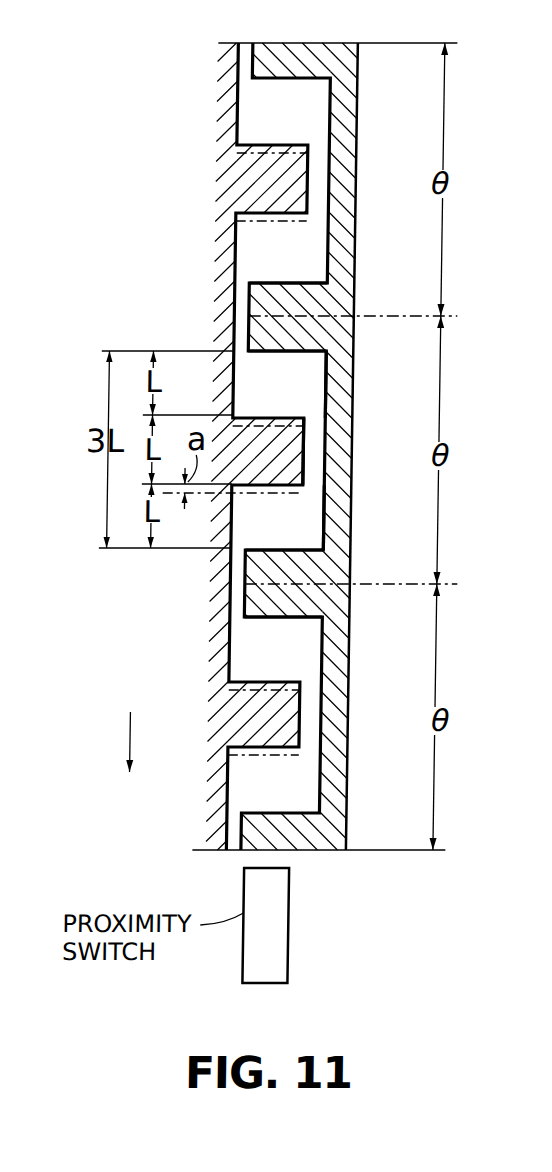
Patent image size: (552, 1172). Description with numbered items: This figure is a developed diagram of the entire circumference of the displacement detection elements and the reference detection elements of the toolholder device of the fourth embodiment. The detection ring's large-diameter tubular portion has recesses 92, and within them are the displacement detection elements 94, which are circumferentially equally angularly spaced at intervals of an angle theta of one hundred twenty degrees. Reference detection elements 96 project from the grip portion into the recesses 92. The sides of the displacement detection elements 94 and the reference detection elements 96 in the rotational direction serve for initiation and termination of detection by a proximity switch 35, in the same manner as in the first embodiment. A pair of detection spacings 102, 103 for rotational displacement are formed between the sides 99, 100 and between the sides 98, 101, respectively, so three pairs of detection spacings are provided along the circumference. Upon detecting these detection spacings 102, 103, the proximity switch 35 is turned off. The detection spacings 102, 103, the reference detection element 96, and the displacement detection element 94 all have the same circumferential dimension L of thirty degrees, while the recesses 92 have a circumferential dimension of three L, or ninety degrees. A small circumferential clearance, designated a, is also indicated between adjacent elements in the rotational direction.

The recess 92 is at (326, 656).
The displacement detection element 94 is at (297, 305).
The reference detection element 96 is at (279, 416).
The side 98 is at (309, 281).
The side 99 is at (336, 381).
The side 100 is at (303, 418).
The side 101 is at (297, 493).
The detection spacing 102 is at (307, 388).
The detection spacing 103 is at (300, 528).
The proximity switch 35 is at (302, 925).